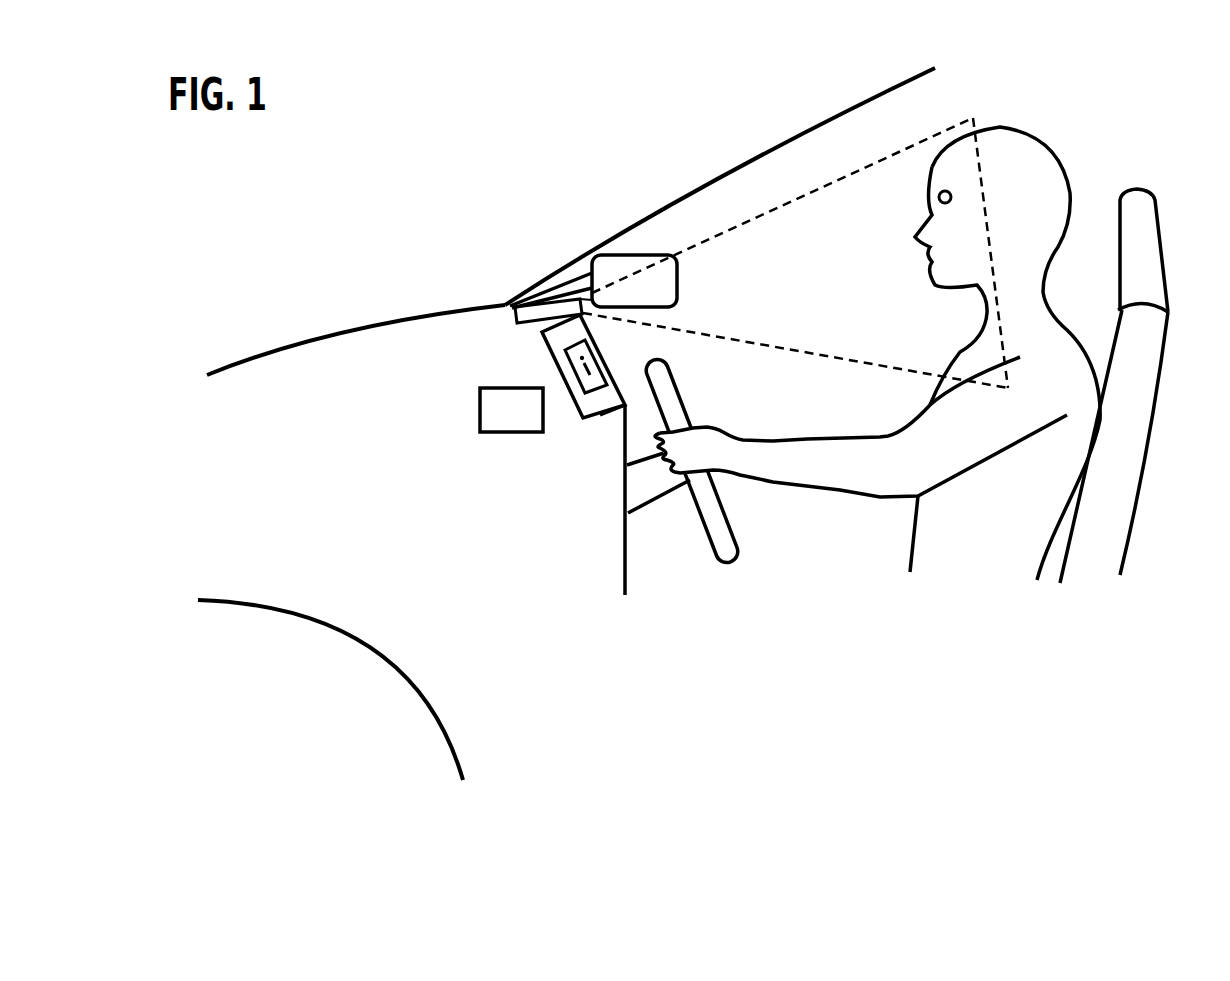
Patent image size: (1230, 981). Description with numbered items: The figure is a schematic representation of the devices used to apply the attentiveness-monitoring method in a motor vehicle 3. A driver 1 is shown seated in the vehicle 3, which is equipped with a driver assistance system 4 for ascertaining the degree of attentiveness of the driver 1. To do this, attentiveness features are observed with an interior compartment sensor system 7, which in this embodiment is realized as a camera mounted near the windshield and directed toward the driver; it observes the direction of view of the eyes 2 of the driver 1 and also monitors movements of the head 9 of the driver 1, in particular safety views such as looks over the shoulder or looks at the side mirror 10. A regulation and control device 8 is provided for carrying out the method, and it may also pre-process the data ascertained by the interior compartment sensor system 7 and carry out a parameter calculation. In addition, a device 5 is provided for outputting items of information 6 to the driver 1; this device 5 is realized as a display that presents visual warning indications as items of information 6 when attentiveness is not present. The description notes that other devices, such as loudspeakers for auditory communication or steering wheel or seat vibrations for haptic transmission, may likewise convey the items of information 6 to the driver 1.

The driver 1 is at (1037, 577).
The eyes 2 is at (938, 197).
The motor vehicle 3 is at (312, 337).
The driver assistance system 4 is at (505, 168).
The device for outputting items of information 5 is at (540, 357).
The items of information 6 is at (598, 410).
The interior compartment sensor system 7 is at (503, 310).
The regulation and control device 8 is at (480, 409).
The head 9 is at (1070, 180).
The side mirror 10 is at (640, 253).